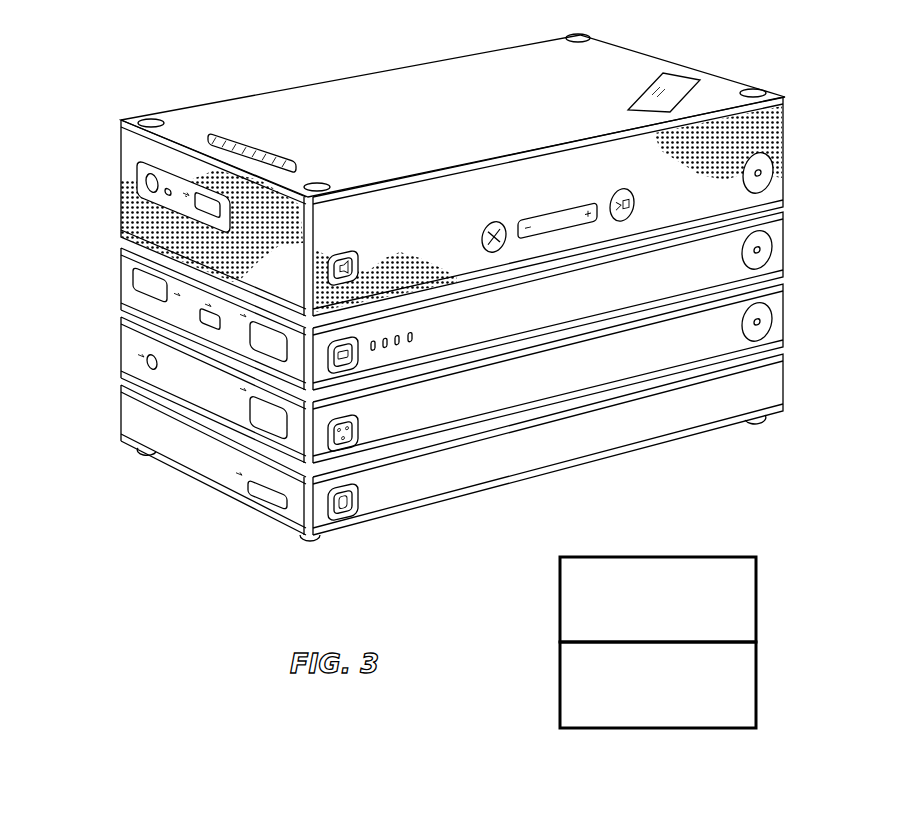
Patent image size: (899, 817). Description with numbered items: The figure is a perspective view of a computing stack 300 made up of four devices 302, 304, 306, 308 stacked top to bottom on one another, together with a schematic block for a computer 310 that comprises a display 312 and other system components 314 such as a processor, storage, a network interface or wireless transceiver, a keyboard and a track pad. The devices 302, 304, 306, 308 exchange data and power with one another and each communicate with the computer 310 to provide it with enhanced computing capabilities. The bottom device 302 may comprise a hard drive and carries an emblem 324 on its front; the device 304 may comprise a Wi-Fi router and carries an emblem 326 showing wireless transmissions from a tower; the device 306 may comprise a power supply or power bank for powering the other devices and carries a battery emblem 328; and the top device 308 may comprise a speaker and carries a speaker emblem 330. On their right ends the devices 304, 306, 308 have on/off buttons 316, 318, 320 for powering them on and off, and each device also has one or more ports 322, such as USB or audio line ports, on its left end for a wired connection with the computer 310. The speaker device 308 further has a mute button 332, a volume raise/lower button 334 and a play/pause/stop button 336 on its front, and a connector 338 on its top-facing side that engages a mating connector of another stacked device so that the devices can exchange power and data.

The computing stack 300 is at (296, 40).
The device 302 is at (785, 380).
The device 304 is at (785, 335).
The device 306 is at (785, 265).
The device 308 is at (785, 186).
The computer 310 is at (683, 515).
The display 312 is at (712, 557).
The other system components 314 is at (712, 728).
The on/off button 316 is at (770, 303).
The on/off button 318 is at (772, 237).
The on/off button 320 is at (772, 160).
The ports 322 is at (137, 187).
The power button 324 is at (360, 498).
The emblem 326 is at (360, 428).
The emblem 328 is at (360, 345).
The emblem 330 is at (340, 252).
The mute button 332 is at (490, 223).
The volume raise/lower button 334 is at (558, 212).
The play/pause/stop button 336 is at (627, 193).
The connector 338 is at (268, 147).